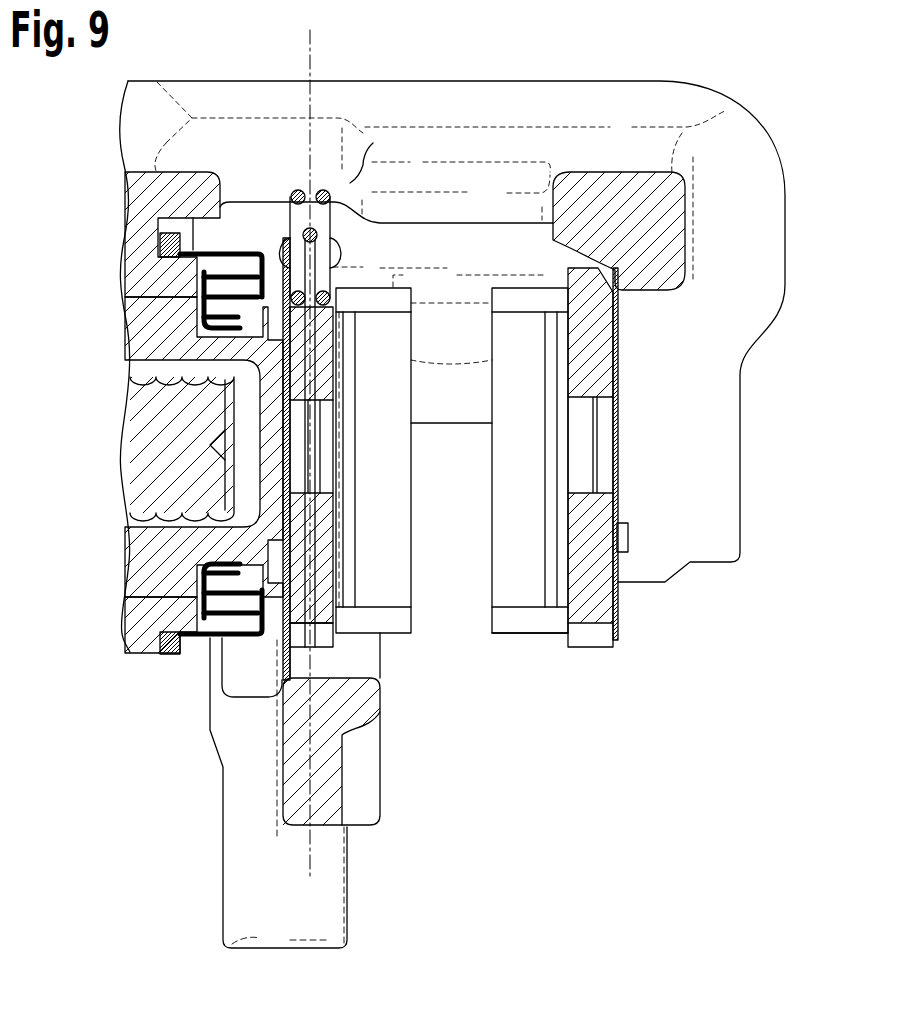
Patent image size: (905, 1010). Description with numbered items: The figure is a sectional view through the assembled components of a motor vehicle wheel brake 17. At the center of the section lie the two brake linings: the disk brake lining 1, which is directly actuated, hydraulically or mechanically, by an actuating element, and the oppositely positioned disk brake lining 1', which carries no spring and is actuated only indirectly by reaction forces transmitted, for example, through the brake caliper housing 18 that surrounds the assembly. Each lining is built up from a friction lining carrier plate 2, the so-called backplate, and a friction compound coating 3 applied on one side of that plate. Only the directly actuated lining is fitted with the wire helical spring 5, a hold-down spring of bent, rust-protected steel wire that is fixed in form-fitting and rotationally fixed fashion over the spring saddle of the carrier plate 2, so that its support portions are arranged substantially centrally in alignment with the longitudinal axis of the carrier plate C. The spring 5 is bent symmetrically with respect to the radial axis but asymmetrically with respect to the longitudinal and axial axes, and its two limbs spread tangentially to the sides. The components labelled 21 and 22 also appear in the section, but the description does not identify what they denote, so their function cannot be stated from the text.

The brake caliper housing 18 is at (228, 100).
The wire helical spring 5 is at (289, 178).
The longitudinal axis of the carrier plate C is at (313, 48).
The disk brake lining 1 is at (374, 335).
The oppositely positioned disk brake lining 1' is at (530, 335).
The friction lining carrier plate 2 is at (297, 355).
The friction compound coating 3 is at (392, 565).
The motor vehicle wheel brake 17 is at (535, 722).
The bearing 21 is at (158, 442).
The hub flange 22 is at (158, 568).